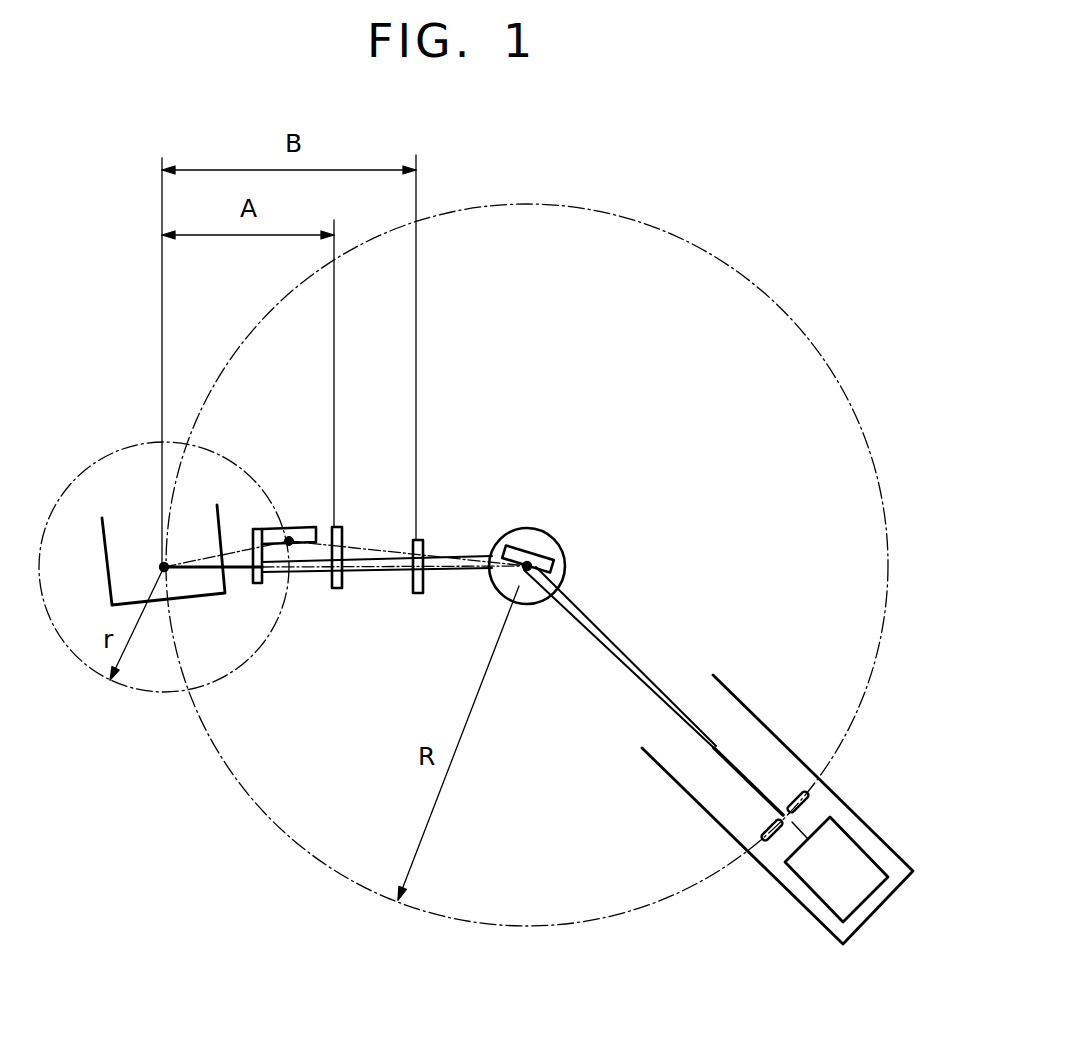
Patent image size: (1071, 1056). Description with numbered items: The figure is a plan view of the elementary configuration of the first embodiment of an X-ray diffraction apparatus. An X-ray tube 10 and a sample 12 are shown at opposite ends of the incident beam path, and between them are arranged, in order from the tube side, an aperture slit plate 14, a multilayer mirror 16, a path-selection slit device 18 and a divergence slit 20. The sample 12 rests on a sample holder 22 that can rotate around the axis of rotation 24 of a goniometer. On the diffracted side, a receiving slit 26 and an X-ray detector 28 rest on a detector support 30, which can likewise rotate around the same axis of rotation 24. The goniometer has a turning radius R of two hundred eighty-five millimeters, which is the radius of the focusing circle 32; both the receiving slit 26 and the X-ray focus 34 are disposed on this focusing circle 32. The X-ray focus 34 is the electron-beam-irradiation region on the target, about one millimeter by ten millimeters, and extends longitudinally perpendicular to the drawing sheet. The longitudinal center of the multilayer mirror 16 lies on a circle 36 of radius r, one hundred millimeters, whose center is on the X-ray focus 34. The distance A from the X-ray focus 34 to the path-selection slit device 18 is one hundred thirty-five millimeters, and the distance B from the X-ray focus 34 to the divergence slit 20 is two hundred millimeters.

The X-ray tube 10 is at (102, 542).
The sample 12 is at (542, 556).
The aperture slit plate 14 is at (259, 584).
The multilayer mirror 16 is at (302, 526).
The path-selection slit device 18 is at (339, 590).
The divergence slit 20 is at (419, 595).
The sample holder 22 is at (518, 526).
The axis of rotation 24 is at (523, 583).
The receiving slit 26 is at (771, 842).
The X-ray detector 28 is at (822, 903).
The detector support 30 is at (683, 794).
The focusing circle 32 is at (600, 204).
The X-ray focus 34 is at (152, 558).
The circle 36 is at (239, 466).